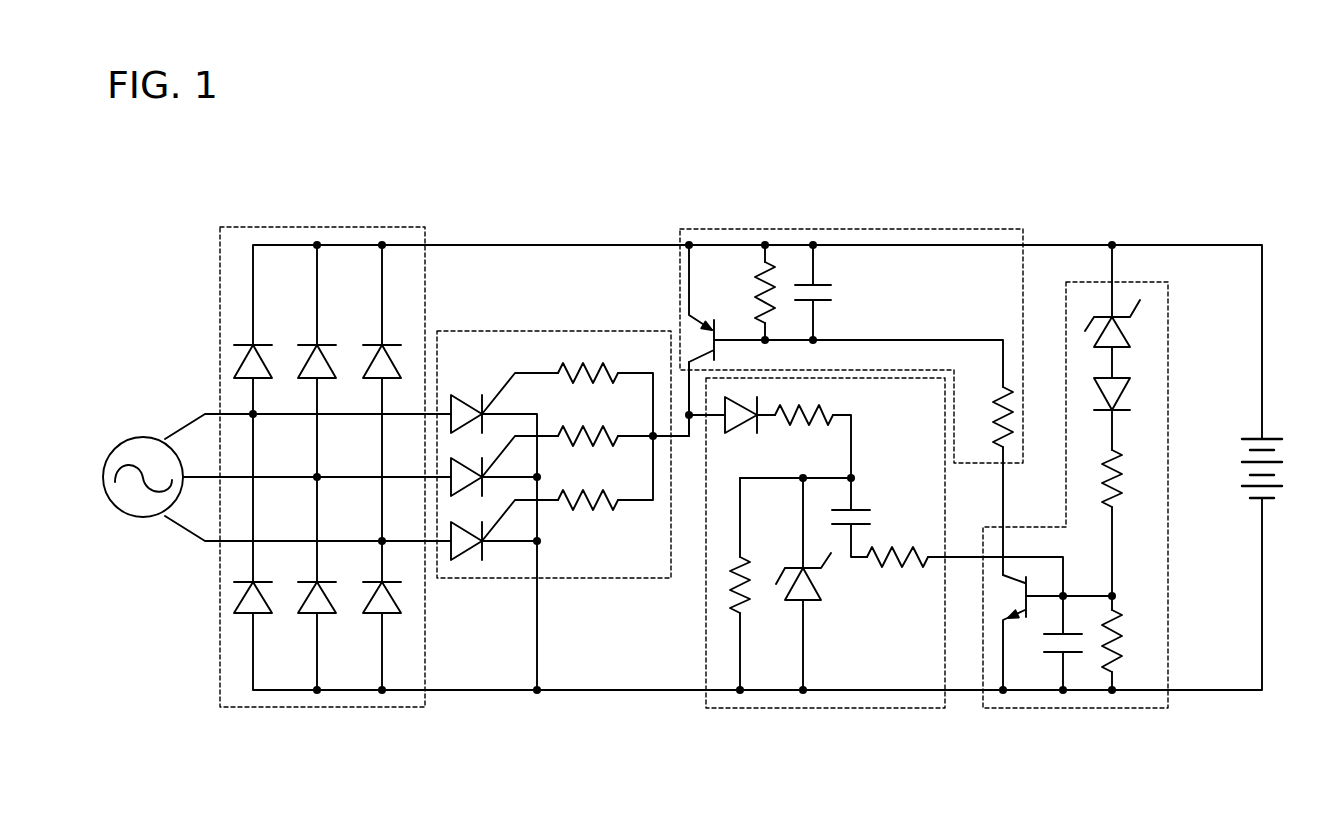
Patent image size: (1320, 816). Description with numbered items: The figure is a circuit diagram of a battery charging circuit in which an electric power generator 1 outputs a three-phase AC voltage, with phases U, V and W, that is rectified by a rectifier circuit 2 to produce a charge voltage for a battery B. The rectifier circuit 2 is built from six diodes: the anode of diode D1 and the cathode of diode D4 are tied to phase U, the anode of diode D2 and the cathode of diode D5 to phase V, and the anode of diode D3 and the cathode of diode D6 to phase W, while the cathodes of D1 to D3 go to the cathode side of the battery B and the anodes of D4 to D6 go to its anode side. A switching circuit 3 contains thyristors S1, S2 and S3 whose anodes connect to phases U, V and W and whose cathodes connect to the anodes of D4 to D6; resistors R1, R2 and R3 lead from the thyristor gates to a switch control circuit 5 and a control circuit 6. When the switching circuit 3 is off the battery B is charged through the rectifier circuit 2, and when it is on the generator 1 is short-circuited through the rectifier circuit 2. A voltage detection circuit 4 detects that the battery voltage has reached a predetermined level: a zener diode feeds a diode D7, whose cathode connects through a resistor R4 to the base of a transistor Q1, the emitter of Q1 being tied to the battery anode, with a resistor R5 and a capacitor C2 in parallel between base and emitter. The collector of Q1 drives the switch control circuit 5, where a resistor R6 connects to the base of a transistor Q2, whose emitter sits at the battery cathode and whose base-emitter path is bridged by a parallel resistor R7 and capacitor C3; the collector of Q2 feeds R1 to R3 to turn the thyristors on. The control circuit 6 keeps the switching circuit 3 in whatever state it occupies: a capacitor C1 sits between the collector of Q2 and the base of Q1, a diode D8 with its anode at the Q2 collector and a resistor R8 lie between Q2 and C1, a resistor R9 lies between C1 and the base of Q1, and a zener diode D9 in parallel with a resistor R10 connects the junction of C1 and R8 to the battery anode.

The electric power generator 1 is at (143, 437).
The rectifier circuit 2 is at (322, 227).
The switching circuit 3 is at (557, 331).
The voltage detection circuit 4 is at (1168, 630).
The switch control circuit 5 is at (852, 229).
The control circuit 6 is at (706, 632).
The battery B is at (1272, 437).
The diode D1 is at (266, 366).
The diode D2 is at (330, 366).
The diode D3 is at (395, 366).
The diode D4 is at (266, 606).
The diode D5 is at (330, 606).
The diode D6 is at (395, 606).
The diode D7 is at (1124, 347).
The diode D8 is at (732, 431).
The zener diode D9 is at (815, 584).
The thyristor S1 is at (462, 406).
The thyristor S2 is at (447, 468).
The thyristor S3 is at (468, 557).
The resistor R1 is at (588, 390).
The resistor R2 is at (588, 453).
The resistor R3 is at (588, 516).
The resistor R4 is at (1129, 530).
The resistor R5 is at (1129, 650).
The resistor R6 is at (985, 481).
The resistor R7 is at (748, 292).
The resistor R8 is at (813, 441).
The resistor R9 is at (965, 573).
The resistor R10 is at (746, 600).
The capacitor C1 is at (867, 517).
The capacitor C2 is at (1047, 643).
The capacitor C3 is at (830, 292).
The transistor Q1 is at (1010, 599).
The transistor Q2 is at (698, 339).